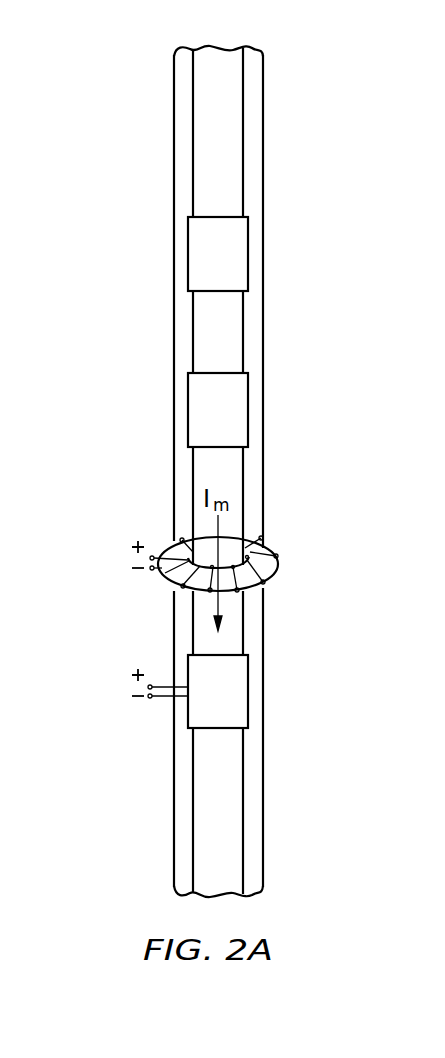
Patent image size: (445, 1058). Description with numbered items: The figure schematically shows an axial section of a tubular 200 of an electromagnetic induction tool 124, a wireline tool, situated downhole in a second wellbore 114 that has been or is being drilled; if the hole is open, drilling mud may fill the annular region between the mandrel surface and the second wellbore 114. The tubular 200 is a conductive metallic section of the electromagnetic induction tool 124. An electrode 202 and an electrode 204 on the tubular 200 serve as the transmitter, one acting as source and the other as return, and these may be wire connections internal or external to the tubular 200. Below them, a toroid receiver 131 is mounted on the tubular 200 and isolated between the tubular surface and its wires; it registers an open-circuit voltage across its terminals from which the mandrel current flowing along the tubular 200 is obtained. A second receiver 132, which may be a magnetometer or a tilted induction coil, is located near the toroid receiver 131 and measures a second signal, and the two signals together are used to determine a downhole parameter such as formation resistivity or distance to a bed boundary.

The second wellbore 114 is at (263, 96).
The electromagnetic induction tool 124 is at (178, 166).
The tubular 200 is at (243, 175).
The electrode 202 is at (248, 232).
The electrode 204 is at (248, 403).
The toroid receiver 131 is at (264, 542).
The second receiver 132 is at (248, 685).